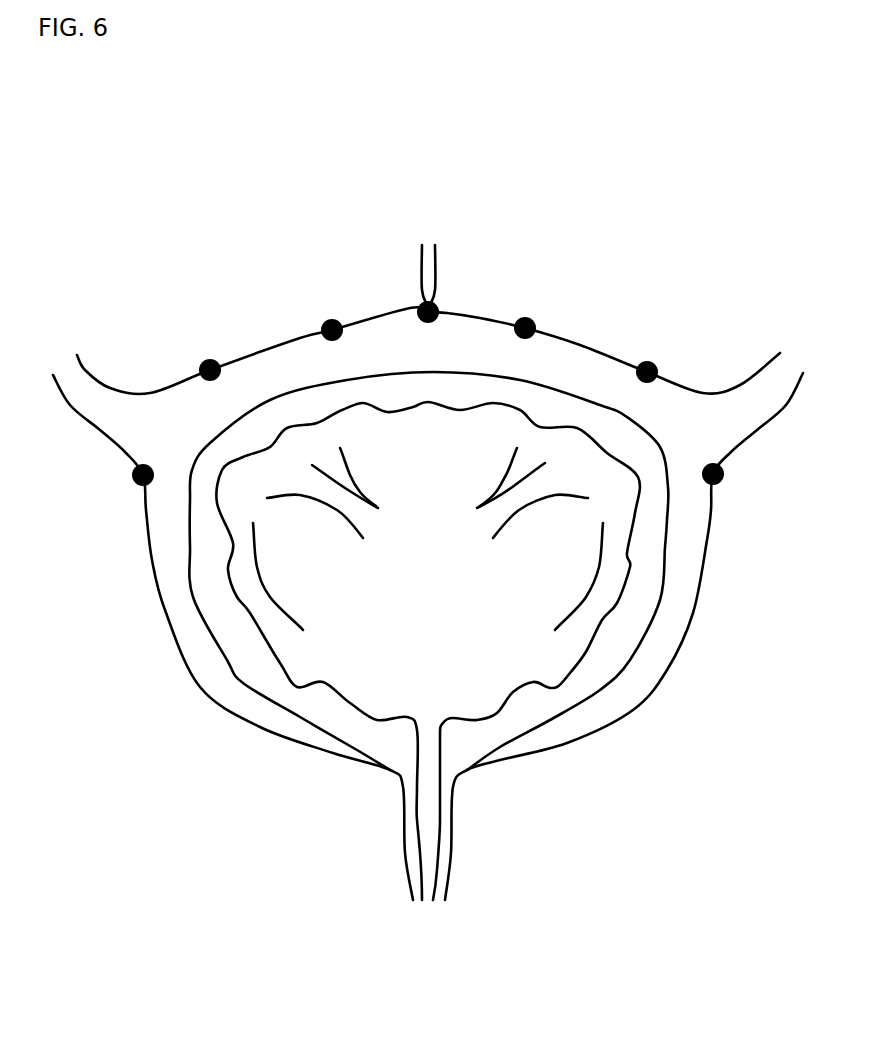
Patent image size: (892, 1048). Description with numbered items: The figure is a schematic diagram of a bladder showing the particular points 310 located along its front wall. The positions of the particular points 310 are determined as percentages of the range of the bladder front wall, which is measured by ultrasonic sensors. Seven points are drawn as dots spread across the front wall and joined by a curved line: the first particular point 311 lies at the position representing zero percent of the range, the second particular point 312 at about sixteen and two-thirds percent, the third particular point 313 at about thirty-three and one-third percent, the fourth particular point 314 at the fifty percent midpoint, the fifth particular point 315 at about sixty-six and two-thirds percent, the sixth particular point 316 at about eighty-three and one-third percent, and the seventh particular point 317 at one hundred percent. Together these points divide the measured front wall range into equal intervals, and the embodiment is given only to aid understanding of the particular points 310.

The particular points 310 is at (722, 149).
The first particular point 311 is at (143, 475).
The second particular point 312 is at (210, 370).
The third particular point 313 is at (332, 330).
The fourth particular point 314 is at (425, 250).
The fifth particular point 315 is at (525, 328).
The sixth particular point 316 is at (647, 372).
The seventh particular point 317 is at (713, 474).